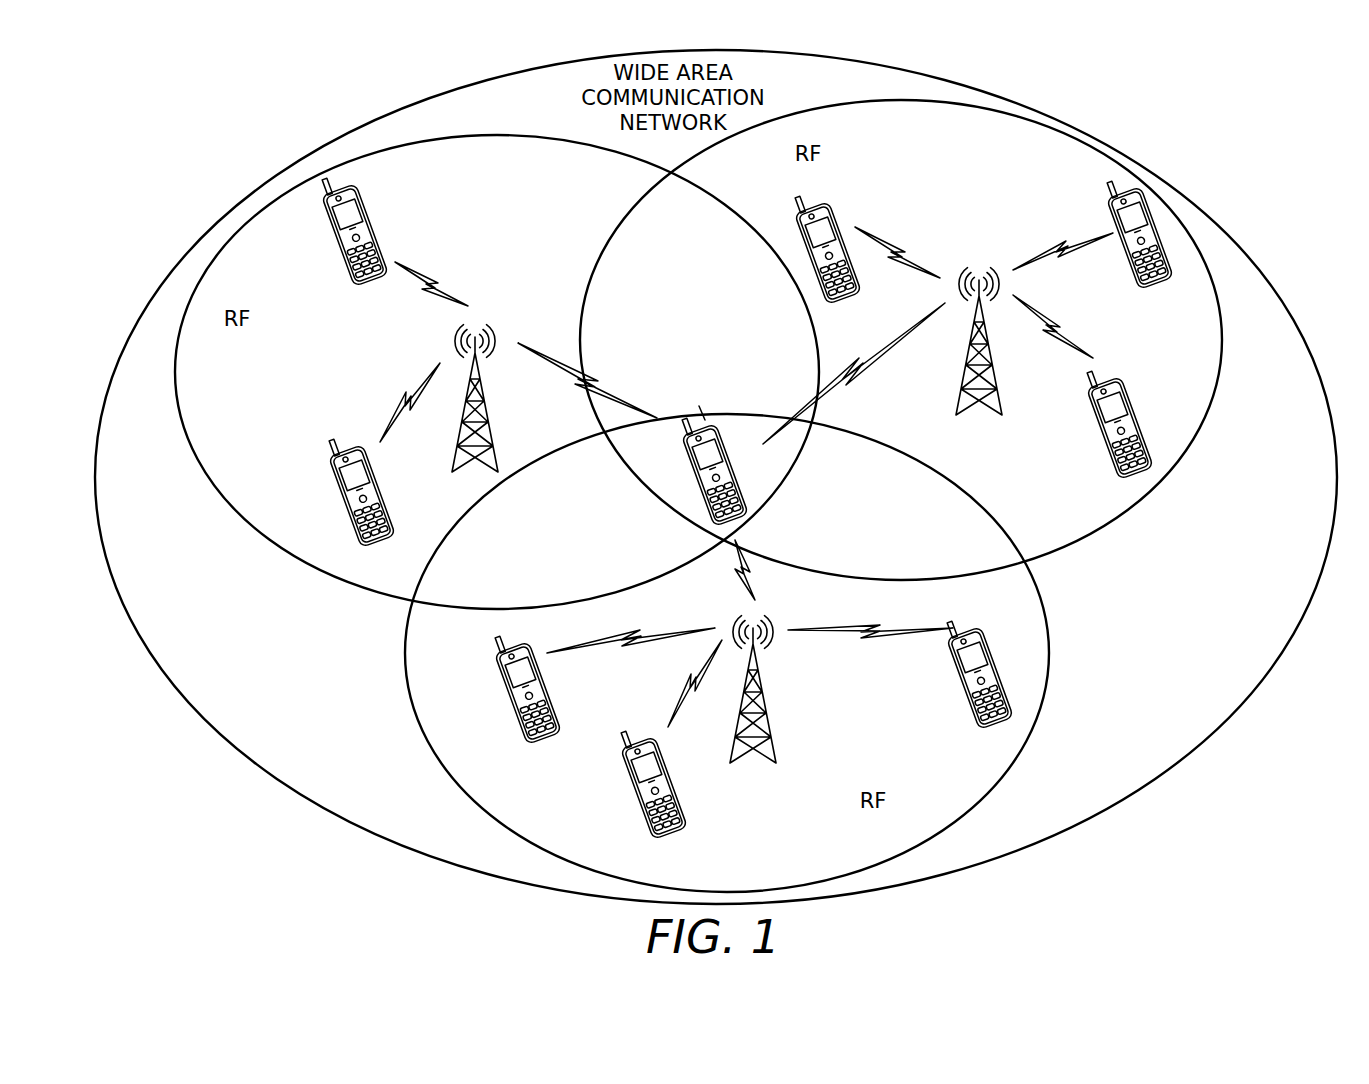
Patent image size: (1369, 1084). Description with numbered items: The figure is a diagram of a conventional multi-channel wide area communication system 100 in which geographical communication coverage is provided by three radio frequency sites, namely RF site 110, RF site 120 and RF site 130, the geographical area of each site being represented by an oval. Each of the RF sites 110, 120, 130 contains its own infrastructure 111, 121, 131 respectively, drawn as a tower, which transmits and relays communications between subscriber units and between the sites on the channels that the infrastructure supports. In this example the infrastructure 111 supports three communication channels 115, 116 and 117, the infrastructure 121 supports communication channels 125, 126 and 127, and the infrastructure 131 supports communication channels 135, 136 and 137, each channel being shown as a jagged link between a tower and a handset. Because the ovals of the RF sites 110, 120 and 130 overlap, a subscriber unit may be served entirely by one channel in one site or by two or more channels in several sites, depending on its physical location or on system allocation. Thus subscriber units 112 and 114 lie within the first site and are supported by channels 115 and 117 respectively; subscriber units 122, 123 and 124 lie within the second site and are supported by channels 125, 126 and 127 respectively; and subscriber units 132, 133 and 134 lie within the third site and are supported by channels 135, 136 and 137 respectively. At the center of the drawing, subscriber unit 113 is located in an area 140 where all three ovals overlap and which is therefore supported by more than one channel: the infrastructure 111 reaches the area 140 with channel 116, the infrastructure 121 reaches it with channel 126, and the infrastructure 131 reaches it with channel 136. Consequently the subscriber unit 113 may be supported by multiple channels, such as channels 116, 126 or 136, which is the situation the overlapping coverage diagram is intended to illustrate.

The wide area communication system 100 is at (516, 125).
The RF site 110 is at (537, 189).
The RF site 120 is at (989, 157).
The RF site 130 is at (946, 802).
The infrastructure 111 is at (453, 462).
The infrastructure 121 is at (1002, 402).
The infrastructure 131 is at (774, 748).
The subscriber unit 112 is at (347, 263).
The subscriber unit 113 is at (692, 455).
The subscriber unit 114 is at (348, 514).
The subscriber unit 122 is at (1107, 449).
The subscriber unit 123 is at (838, 219).
The subscriber unit 124 is at (1128, 272).
The subscriber unit 132 is at (638, 807).
The subscriber unit 133 is at (514, 713).
The subscriber unit 134 is at (966, 697).
The communication channel 115 is at (458, 285).
The communication channel 116 is at (527, 340).
The communication channel 117 is at (408, 400).
The communication channel 125 is at (1062, 322).
The communication channel 126 is at (905, 252).
The communication channel 127 is at (1056, 248).
The communication channel 135 is at (683, 703).
The communication channel 136 is at (747, 590).
The communication channel 137 is at (843, 638).
The area 140 is at (708, 416).